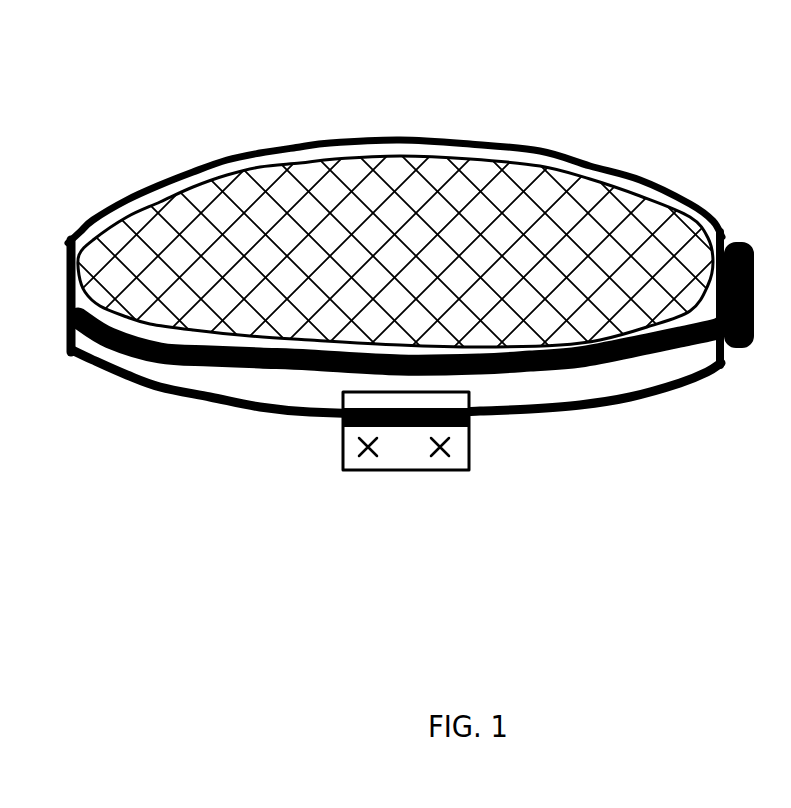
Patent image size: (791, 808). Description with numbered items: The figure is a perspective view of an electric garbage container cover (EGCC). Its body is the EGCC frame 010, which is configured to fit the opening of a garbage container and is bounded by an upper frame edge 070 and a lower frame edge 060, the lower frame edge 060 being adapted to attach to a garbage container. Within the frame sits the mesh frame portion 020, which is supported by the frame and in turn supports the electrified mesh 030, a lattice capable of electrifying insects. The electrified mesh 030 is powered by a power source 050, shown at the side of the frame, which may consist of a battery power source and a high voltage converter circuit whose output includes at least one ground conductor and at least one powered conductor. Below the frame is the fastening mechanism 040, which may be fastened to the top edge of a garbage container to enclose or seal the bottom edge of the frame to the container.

The EGCC frame 010 is at (350, 170).
The mesh frame portion 020 is at (401, 162).
The electrified mesh 030 is at (242, 227).
The fastening mechanism 040 is at (405, 468).
The power source 050 is at (742, 243).
The lower frame edge 060 is at (617, 405).
The upper frame edge 070 is at (465, 148).